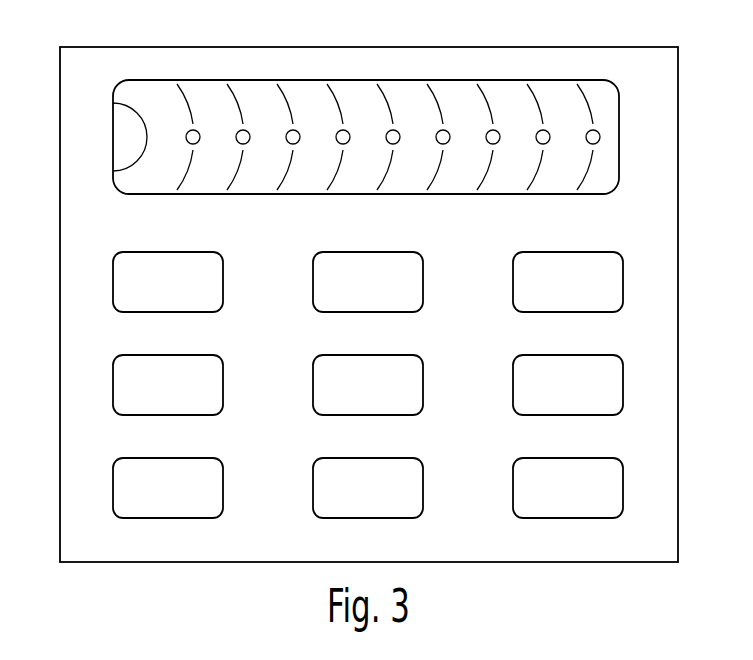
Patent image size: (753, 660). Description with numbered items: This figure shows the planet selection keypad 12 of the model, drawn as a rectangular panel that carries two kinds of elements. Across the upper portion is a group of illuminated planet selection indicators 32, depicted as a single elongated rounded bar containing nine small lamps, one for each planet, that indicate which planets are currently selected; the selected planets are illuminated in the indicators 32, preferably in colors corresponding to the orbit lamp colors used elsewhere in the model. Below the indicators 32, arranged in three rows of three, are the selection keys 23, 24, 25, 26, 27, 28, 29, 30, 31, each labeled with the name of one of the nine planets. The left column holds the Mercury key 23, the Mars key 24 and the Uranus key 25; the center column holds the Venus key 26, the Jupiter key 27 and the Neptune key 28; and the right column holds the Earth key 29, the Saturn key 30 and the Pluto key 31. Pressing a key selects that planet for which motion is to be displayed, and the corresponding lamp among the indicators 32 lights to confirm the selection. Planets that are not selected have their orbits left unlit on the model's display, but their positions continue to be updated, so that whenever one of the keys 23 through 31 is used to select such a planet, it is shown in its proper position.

The planet selection keypad 12 is at (678, 206).
The illuminated planet selection indicators 32 is at (616, 87).
The selection key 23 is at (220, 252).
The selection key 24 is at (220, 355).
The selection key 25 is at (220, 458).
The selection key 26 is at (420, 252).
The selection key 27 is at (420, 355).
The selection key 28 is at (420, 458).
The selection key 29 is at (620, 252).
The selection key 30 is at (620, 355).
The selection key 31 is at (620, 458).